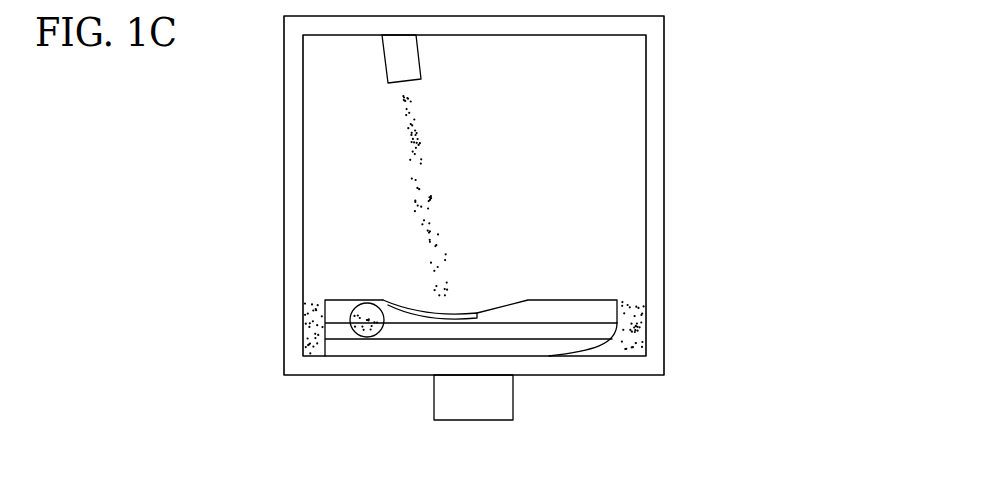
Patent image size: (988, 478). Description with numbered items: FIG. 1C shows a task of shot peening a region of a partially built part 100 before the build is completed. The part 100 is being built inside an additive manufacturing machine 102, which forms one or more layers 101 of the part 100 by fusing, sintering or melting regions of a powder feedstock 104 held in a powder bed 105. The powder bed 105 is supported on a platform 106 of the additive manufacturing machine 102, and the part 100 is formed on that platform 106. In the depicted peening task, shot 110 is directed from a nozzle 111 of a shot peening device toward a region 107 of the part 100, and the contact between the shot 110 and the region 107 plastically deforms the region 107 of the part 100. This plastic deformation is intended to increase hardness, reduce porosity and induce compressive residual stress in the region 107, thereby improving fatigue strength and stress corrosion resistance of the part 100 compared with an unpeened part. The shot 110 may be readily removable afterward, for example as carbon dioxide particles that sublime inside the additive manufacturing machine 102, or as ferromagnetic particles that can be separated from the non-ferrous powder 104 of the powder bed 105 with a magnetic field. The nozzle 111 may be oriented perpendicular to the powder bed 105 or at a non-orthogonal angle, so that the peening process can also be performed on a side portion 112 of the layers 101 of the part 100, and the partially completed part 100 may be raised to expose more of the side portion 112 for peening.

The part 100 is at (568, 268).
The layer 101 is at (410, 347).
The additive manufacturing machine 102 is at (686, 71).
The powder feedstock 104 is at (634, 340).
The powder bed 105 is at (636, 283).
The platform 106 is at (578, 367).
The region 107 is at (406, 300).
The shot 110 is at (422, 175).
The nozzle 111 is at (390, 62).
The side portion 112 is at (325, 327).